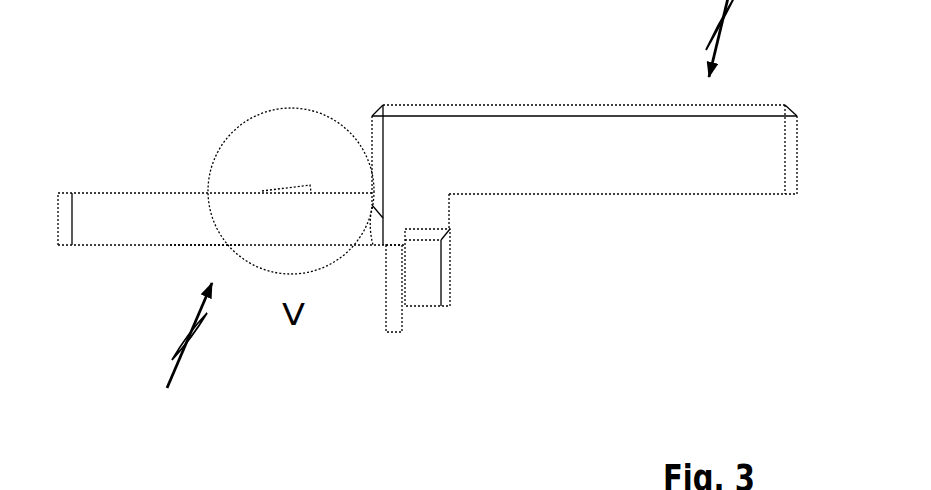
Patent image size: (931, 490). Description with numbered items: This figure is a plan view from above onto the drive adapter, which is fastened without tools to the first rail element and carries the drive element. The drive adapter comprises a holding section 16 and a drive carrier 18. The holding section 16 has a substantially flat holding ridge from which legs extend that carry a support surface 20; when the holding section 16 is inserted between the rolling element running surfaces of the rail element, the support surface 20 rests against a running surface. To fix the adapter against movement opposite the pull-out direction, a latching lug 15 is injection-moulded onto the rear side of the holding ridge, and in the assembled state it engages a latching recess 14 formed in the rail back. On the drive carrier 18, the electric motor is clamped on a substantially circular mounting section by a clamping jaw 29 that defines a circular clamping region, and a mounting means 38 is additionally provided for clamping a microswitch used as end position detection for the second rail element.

The latching recess 14 is at (152, 193).
The latching lug 15 is at (300, 185).
The holding section 16 is at (180, 355).
The drive carrier 18 is at (98, 217).
The support surface 20 is at (181, 207).
The clamping jaw 29 is at (388, 310).
The mounting means 38 is at (420, 275).